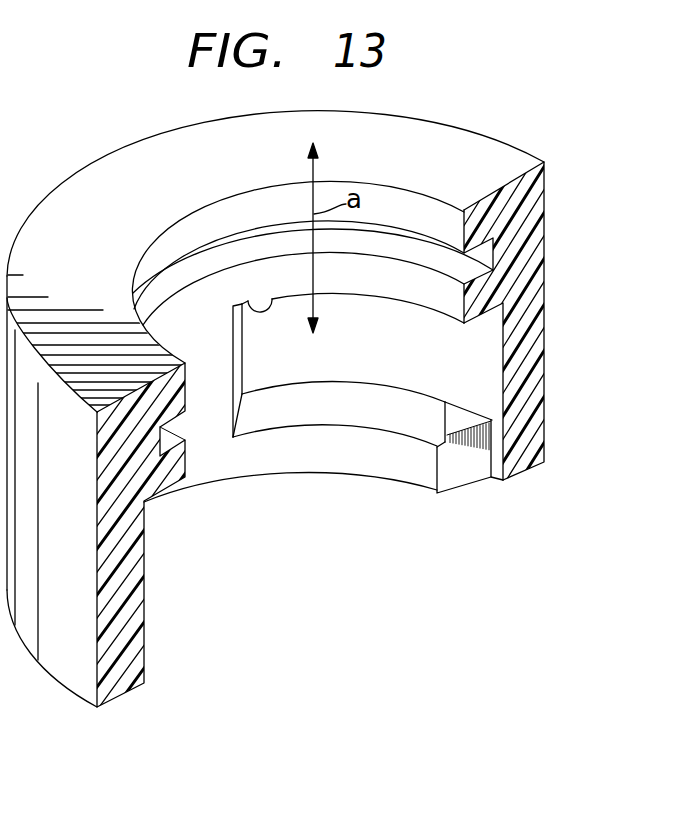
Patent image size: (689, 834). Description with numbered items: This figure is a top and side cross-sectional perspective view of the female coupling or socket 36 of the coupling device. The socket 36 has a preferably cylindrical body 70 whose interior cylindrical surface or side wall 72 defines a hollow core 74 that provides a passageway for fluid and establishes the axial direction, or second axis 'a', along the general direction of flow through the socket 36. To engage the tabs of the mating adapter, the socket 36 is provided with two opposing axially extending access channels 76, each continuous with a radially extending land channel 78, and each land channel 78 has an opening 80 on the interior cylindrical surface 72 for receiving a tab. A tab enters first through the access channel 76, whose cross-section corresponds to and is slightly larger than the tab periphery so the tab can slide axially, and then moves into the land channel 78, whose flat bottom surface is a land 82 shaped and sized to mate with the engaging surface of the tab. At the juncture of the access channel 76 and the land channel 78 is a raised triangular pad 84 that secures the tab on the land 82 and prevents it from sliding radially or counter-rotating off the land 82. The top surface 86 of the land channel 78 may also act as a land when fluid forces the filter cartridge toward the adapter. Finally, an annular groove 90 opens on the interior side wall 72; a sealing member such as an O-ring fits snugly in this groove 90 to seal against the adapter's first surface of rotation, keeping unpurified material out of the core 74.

The female coupling or socket 36 is at (131, 116).
The cylindrical body 70 is at (539, 287).
The interior cylindrical surface or side wall 72 is at (399, 209).
The hollow core 74 is at (265, 203).
The access channel 76 is at (466, 478).
The land channel 78 is at (482, 338).
The opening 80 is at (483, 382).
The land 82 is at (376, 392).
The raised triangular pad 84 is at (458, 408).
The top surface of the land channel 86 is at (248, 301).
The annular groove 90 is at (410, 268).